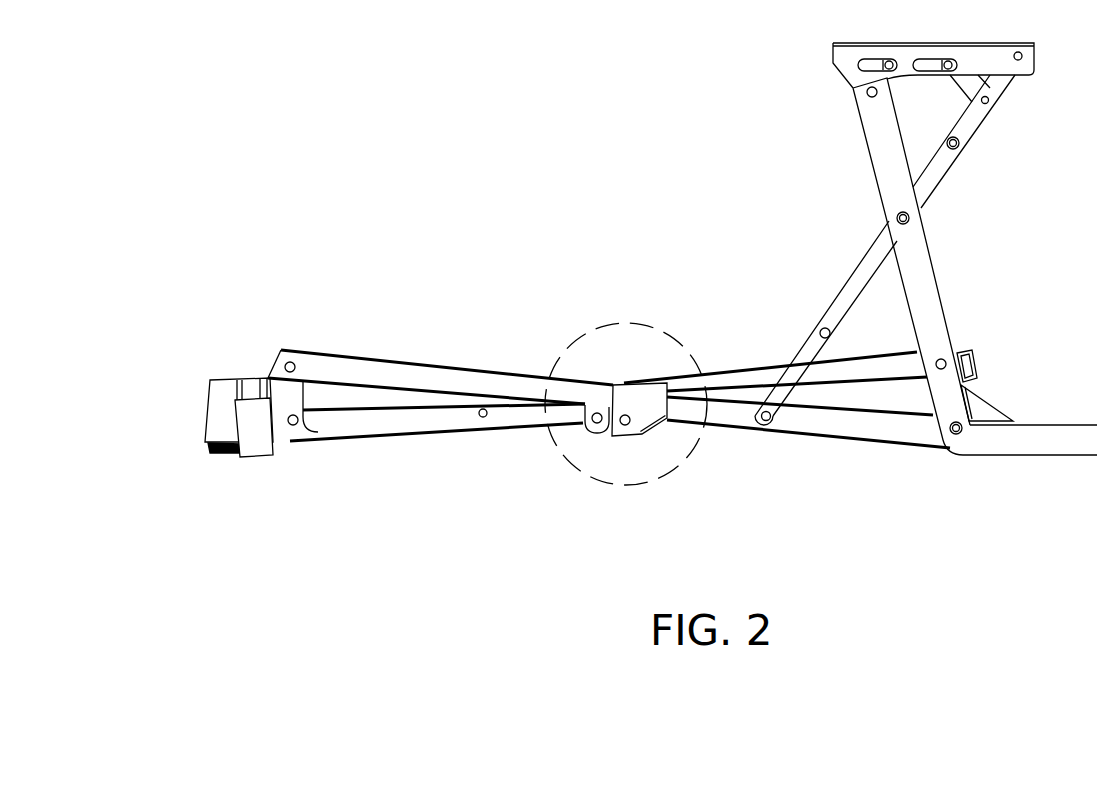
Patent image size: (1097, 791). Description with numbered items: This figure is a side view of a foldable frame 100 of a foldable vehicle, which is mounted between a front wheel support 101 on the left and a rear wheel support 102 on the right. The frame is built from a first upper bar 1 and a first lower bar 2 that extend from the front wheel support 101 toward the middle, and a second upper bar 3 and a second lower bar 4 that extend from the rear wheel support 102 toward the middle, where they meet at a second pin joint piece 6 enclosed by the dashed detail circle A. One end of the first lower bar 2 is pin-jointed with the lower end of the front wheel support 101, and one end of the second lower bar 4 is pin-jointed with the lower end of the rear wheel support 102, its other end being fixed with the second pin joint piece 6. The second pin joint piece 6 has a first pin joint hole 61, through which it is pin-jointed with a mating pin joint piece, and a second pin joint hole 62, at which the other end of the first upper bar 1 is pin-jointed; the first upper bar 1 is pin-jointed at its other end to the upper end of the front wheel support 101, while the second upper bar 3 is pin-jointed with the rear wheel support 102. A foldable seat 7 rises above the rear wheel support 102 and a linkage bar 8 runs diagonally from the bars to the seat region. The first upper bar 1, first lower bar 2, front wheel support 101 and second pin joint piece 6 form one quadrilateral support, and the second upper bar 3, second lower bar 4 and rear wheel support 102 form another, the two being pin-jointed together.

The foldable frame 100 is at (232, 86).
The front wheel support 101 is at (229, 377).
The rear wheel support 102 is at (998, 458).
The first upper bar 1 is at (401, 360).
The first lower bar 2 is at (408, 440).
The second upper bar 3 is at (741, 367).
The second lower bar 4 is at (833, 443).
The second pin joint piece 6 is at (631, 398).
The first pin joint hole 61 is at (626, 426).
The second pin joint hole 62 is at (596, 424).
The foldable seat 7 is at (845, 86).
The linkage bar 8 is at (808, 334).
The detail region A is at (680, 469).